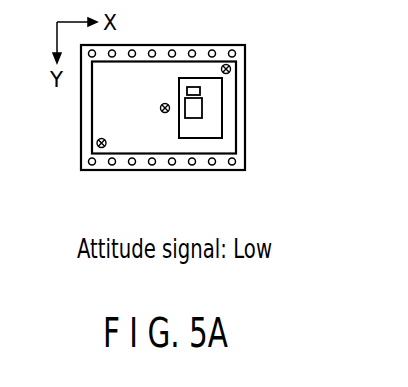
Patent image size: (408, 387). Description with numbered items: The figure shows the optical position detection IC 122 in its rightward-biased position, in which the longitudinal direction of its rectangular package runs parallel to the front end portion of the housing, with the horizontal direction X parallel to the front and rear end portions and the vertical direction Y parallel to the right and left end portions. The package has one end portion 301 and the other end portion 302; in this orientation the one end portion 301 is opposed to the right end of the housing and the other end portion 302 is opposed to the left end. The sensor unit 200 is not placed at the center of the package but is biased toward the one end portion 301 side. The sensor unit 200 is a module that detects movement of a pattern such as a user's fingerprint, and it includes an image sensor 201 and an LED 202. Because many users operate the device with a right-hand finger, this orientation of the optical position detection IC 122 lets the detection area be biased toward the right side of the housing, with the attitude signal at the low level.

The optical position detection IC 122 is at (226, 171).
The sensor unit 200 is at (213, 118).
The image sensor 201 is at (196, 118).
The LED 202 is at (193, 87).
The one end portion 301 is at (245, 58).
The other end portion 302 is at (80, 131).